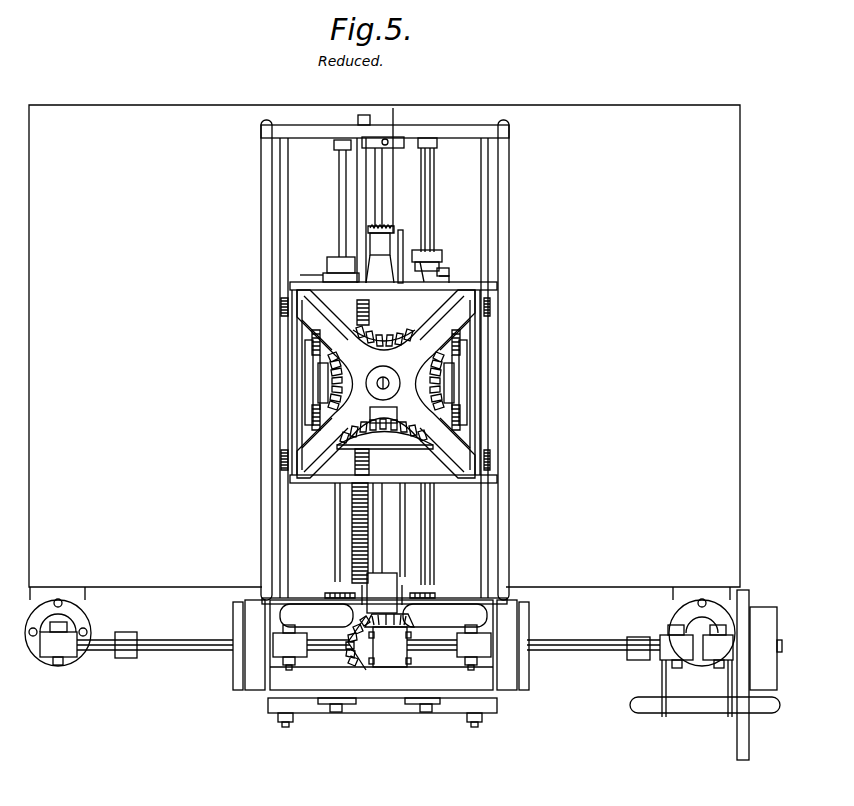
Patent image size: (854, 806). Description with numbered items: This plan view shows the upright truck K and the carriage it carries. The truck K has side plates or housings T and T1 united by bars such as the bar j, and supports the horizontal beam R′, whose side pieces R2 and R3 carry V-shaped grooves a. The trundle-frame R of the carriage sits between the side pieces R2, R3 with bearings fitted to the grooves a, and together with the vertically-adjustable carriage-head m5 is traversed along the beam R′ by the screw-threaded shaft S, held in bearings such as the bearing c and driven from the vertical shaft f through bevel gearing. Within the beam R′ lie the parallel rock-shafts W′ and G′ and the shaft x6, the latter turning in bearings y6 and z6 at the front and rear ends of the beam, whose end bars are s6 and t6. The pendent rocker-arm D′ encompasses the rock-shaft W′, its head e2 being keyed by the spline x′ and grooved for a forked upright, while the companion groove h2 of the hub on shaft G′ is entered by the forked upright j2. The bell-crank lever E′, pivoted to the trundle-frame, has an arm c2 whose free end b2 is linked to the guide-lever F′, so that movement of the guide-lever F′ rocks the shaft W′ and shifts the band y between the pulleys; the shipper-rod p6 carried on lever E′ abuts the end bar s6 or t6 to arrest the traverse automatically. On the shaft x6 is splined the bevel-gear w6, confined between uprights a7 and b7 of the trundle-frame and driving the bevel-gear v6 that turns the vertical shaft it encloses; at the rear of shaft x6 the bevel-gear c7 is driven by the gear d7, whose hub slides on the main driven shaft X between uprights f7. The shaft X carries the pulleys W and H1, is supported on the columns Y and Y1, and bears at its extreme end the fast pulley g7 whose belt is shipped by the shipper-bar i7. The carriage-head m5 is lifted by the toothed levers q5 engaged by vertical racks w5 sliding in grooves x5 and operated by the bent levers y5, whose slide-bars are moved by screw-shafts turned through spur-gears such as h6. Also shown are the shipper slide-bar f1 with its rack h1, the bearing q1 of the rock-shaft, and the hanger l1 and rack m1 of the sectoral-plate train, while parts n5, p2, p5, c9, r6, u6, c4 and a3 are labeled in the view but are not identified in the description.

The grooves a is at (385, 368).
The bearing y6 is at (391, 162).
The end bar s6 is at (405, 128).
The spline x′ is at (340, 182).
The pulley W is at (278, 447).
The screw-threaded shaft S is at (353, 348).
The shaft x6 is at (384, 360).
The rock-shaft G′ is at (434, 361).
The bevel-gear w6 is at (397, 337).
The block n5 is at (379, 258).
The arm of lever E′ c2 is at (396, 256).
The head of rocker-arm e2 is at (341, 263).
The rocker-arm D′ is at (336, 268).
The forked upright j2 is at (354, 291).
The rod p2 is at (424, 262).
The guide-lever F′ is at (440, 250).
The free end of arm c2 b2 is at (440, 266).
The bell-crank lever E′ is at (449, 272).
The peripheral groove h2 is at (452, 278).
The trundle-frame R is at (386, 384).
The toothed lever q5 is at (300, 330).
The horizontal beam R′ is at (386, 385).
The side piece R2 is at (363, 380).
The toothed rack w5 is at (318, 380).
The grooves x5 is at (318, 393).
The bar p5 is at (308, 410).
The carriage-head m5 is at (456, 407).
The bent lever y5 is at (384, 381).
The spur-gear h6 is at (316, 358).
The vertical shaft f is at (368, 385).
The arm c9 is at (437, 328).
The screw r6 is at (392, 334).
The bevel-gear v6 is at (392, 336).
The hub u6 is at (389, 383).
The upright a7 is at (383, 414).
The upright b7 is at (385, 446).
The bearing c is at (357, 464).
The side piece R3 is at (498, 508).
The rock-shaft W′ is at (335, 532).
The shipper-rod p6 is at (409, 530).
The bearing z6 is at (382, 593).
The end bar t6 is at (384, 609).
The bevel-gear c7 is at (350, 644).
The gear hub c4 is at (389, 640).
The main driven shaft X is at (368, 635).
The slide-bar f1 is at (350, 655).
The upright f7 is at (410, 655).
The bevel-gear d7 is at (372, 660).
The housing T is at (270, 692).
The housing T1 is at (493, 692).
The truck K is at (380, 729).
The bearing q1 is at (345, 710).
The bar j is at (395, 704).
The band y is at (248, 651).
The pulley H1 is at (521, 645).
The hub a3 is at (510, 649).
The hanger l1 is at (126, 645).
The toothed rack m1 is at (638, 648).
The upright column Y is at (61, 632).
The upright column Y1 is at (697, 658).
The shipper-bar i7 is at (706, 694).
The fast pulley g7 is at (750, 608).
The toothed rack h1 is at (766, 648).